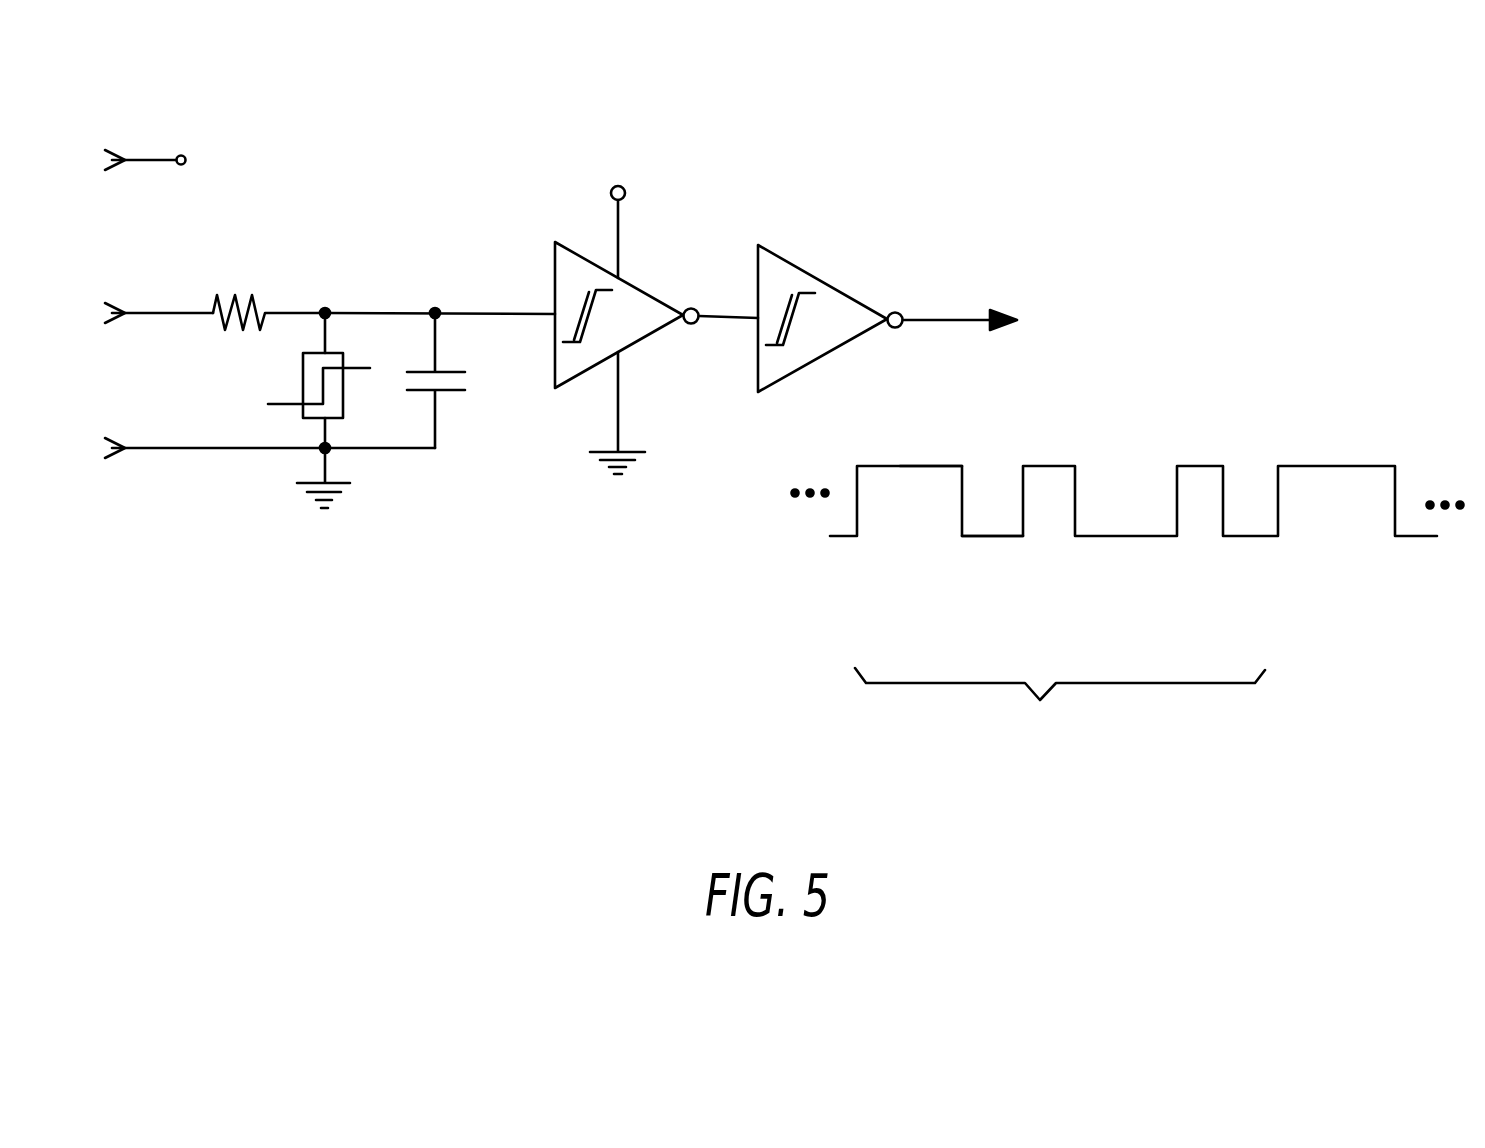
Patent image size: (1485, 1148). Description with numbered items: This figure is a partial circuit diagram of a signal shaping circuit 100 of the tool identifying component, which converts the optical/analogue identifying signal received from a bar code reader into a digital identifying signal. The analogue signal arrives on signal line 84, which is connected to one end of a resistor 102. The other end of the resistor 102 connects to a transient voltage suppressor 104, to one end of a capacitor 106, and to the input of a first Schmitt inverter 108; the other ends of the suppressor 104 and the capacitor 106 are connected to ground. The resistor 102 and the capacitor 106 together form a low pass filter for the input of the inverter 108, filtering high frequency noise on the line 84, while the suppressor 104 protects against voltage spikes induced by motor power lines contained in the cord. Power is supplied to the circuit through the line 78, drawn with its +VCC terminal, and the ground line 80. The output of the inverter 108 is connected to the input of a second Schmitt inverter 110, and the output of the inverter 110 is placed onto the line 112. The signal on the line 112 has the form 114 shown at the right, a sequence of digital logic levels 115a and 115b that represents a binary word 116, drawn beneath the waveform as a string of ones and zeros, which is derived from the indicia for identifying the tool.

The line 78 is at (152, 160).
The signal line 84 is at (152, 313).
The resistor 102 is at (245, 302).
The transient voltage suppressor 104 is at (303, 372).
The ground line 80 is at (148, 448).
The capacitor 106 is at (450, 392).
The Schmitt inverter 108 is at (635, 352).
The Schmitt inverter 110 is at (805, 368).
The line 112 is at (943, 320).
The form 114 is at (830, 530).
The digital logic level 115a is at (945, 465).
The digital logic level 115b is at (990, 536).
The binary word 116 is at (1106, 691).
The signal shaping circuit 100 is at (314, 636).